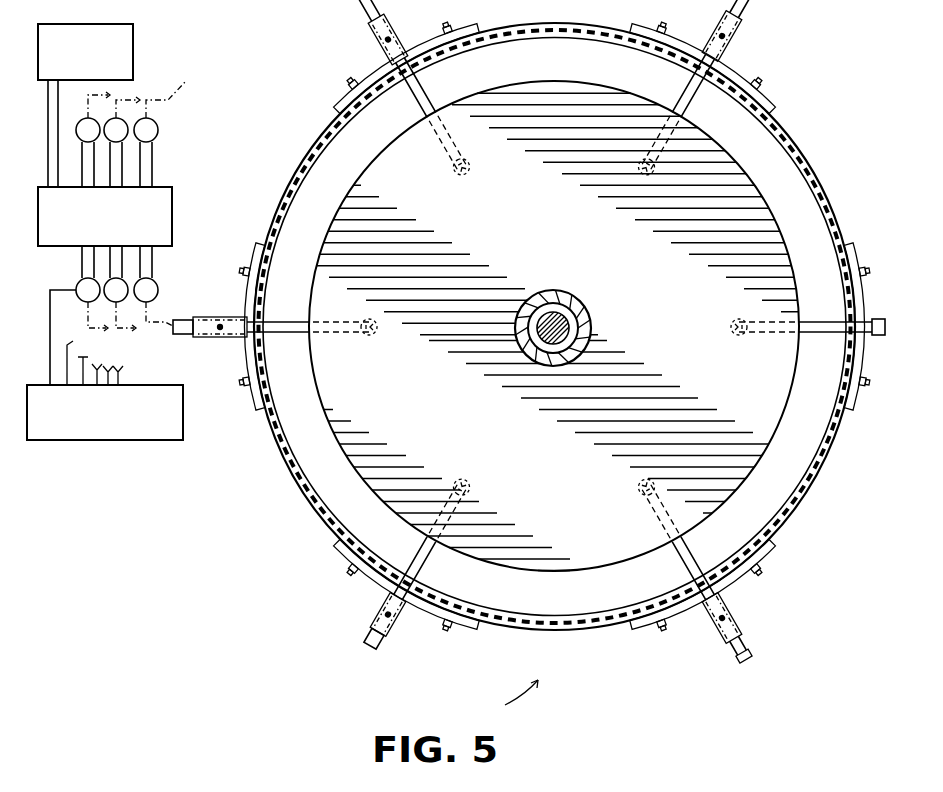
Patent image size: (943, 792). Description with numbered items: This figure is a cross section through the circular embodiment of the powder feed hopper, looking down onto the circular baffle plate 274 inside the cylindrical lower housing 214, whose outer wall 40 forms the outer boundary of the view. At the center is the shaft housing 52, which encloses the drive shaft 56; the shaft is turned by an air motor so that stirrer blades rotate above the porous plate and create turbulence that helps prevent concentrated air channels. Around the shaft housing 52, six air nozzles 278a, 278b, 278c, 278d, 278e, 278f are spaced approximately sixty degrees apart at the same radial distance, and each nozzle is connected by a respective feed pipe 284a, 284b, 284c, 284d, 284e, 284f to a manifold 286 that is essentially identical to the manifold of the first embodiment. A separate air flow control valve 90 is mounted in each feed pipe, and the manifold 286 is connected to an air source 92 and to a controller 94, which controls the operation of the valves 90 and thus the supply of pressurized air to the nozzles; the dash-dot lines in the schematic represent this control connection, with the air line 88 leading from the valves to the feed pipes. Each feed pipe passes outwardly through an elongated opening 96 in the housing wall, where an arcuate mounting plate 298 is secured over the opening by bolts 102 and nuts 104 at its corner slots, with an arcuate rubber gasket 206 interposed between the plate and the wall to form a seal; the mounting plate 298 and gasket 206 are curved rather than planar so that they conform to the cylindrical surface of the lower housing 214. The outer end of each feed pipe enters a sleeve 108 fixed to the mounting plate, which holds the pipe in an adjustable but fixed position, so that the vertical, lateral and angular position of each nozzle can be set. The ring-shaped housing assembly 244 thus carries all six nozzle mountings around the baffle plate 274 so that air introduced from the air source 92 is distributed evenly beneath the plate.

The outer wall 40 is at (300, 500).
The shaft housing 52 is at (590, 320).
The drive shaft 56 is at (565, 316).
The air supply line 88 is at (190, 75).
The air flow control valve 90 is at (158, 128).
The air source 92 is at (133, 31).
The controller 94 is at (103, 440).
The elongated opening 96 is at (405, 580).
The bolt 102 is at (388, 615).
The nut 104 is at (352, 570).
The sleeve 108 is at (374, 638).
The rubber gasket 206 is at (335, 560).
The lower housing 214 is at (504, 701).
The outer ring 244 is at (540, 630).
The baffle plate 274 is at (330, 422).
The air nozzle 278a is at (470, 182).
The air nozzle 278b is at (627, 182).
The air nozzle 278c is at (728, 340).
The air nozzle 278d is at (633, 490).
The air nozzle 278e is at (478, 476).
The air nozzle 278f is at (372, 345).
The feed pipe 284a is at (428, 110).
The feed pipe 284b is at (680, 97).
The feed pipe 284c is at (828, 335).
The feed pipe 284d is at (668, 567).
The feed pipe 284e is at (385, 604).
The feed pipe 284f is at (284, 333).
The manifold 286 is at (172, 205).
The mounting plate 298 is at (404, 588).